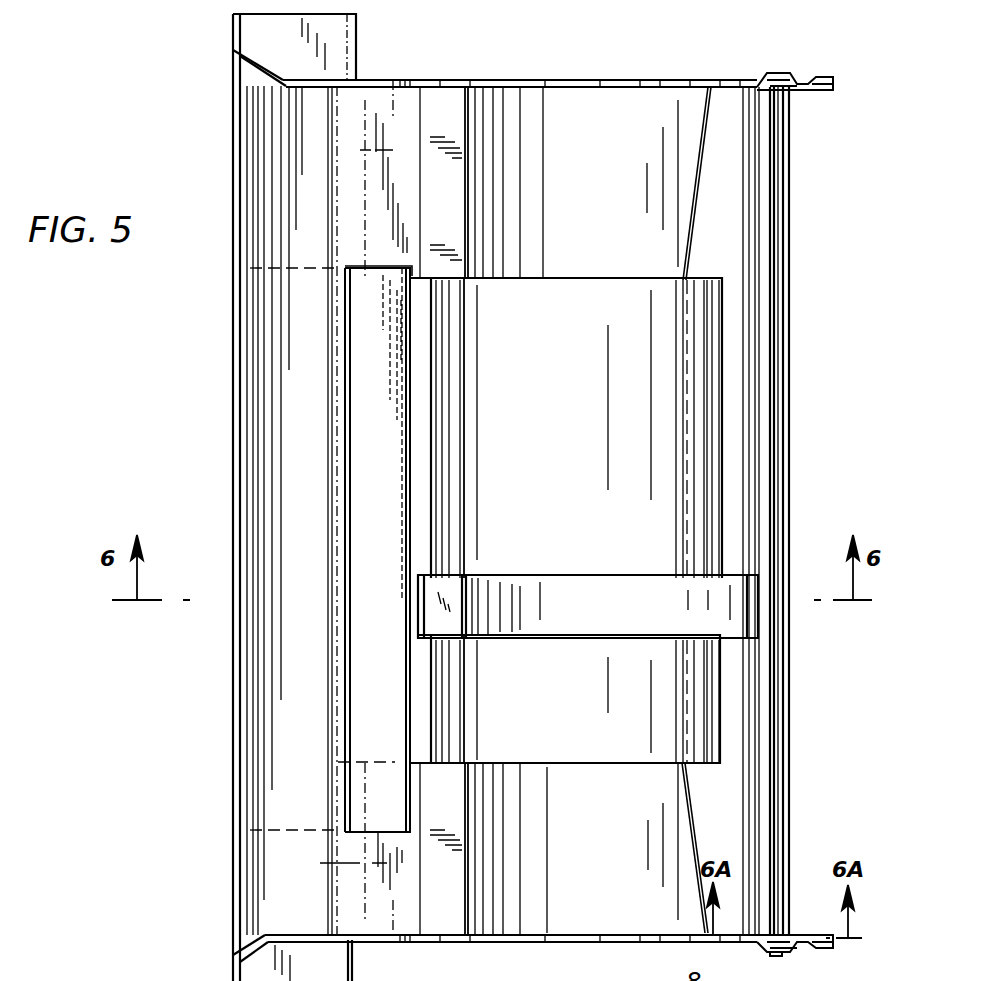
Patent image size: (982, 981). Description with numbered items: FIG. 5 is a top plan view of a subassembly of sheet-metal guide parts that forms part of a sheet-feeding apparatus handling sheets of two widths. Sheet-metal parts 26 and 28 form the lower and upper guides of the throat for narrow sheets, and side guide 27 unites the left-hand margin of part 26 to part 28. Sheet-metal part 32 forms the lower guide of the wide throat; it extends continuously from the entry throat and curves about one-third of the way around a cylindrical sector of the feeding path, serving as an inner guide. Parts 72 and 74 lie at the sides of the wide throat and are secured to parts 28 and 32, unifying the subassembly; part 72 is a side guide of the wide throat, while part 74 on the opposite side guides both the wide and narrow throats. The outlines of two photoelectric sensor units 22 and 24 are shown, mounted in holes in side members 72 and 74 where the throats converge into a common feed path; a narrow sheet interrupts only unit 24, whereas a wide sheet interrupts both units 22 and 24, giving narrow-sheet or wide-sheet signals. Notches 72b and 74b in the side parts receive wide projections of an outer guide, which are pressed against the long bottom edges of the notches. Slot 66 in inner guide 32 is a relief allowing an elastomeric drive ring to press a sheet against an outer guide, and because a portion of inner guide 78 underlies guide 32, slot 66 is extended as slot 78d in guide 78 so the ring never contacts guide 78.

The photoelectric sensor unit 22 is at (398, 94).
The photoelectric sensor unit 24 is at (388, 918).
The sheet-metal part 26 is at (384, 592).
The side guide 27 is at (379, 256).
The sheet-metal part 28 is at (300, 575).
The sheet-metal part 32 is at (597, 546).
The slot 66 is at (534, 576).
The side guide part 72 is at (545, 80).
The notch 72b is at (797, 78).
The side guide part 74 is at (490, 942).
The notch 74b is at (800, 948).
The inner guide 78 is at (708, 248).
The slot 78d is at (728, 636).